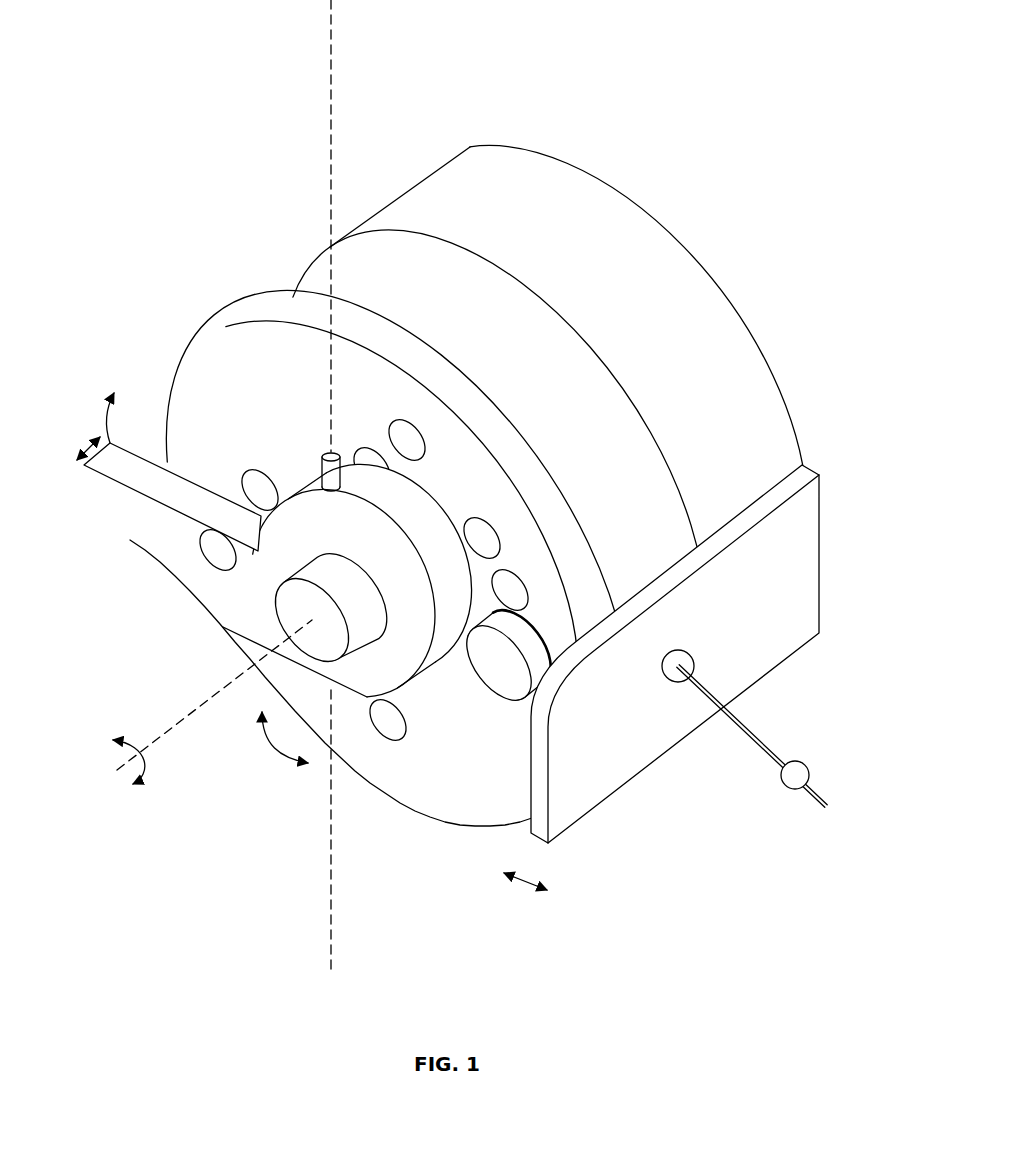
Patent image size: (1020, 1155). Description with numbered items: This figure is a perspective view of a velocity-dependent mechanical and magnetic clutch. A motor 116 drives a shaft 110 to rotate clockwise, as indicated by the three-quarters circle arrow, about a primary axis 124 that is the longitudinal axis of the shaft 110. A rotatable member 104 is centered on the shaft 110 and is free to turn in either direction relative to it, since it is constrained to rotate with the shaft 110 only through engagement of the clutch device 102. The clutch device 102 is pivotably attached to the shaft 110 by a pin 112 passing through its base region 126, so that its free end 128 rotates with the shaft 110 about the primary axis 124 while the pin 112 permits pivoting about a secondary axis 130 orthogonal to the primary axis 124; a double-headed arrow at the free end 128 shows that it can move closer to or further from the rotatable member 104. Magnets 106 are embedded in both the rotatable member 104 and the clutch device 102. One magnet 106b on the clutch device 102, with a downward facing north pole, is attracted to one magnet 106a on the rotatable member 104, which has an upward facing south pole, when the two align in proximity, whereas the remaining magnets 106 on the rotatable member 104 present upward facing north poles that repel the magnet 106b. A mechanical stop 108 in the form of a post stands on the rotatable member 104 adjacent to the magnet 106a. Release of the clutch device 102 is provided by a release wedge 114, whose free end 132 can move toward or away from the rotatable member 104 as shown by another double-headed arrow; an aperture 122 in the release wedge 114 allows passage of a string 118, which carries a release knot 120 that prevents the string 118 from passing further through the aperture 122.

The clutch device 102 is at (365, 554).
The rotatable member 104 is at (236, 298).
The magnets 106 is at (397, 424).
The magnet 106a is at (531, 596).
The magnet 106b is at (204, 553).
The mechanical stop 108 is at (502, 704).
The shaft 110 is at (280, 588).
The pin 112 is at (327, 456).
The release wedge 114 is at (637, 776).
The motor 116 is at (497, 138).
The string 118 is at (768, 730).
The release knot 120 is at (788, 790).
The aperture 122 is at (695, 658).
The primary axis 124 is at (162, 738).
The base region 126 is at (319, 536).
The free end 128 is at (192, 578).
The secondary axis 130 is at (329, 70).
The free end 132 is at (603, 827).